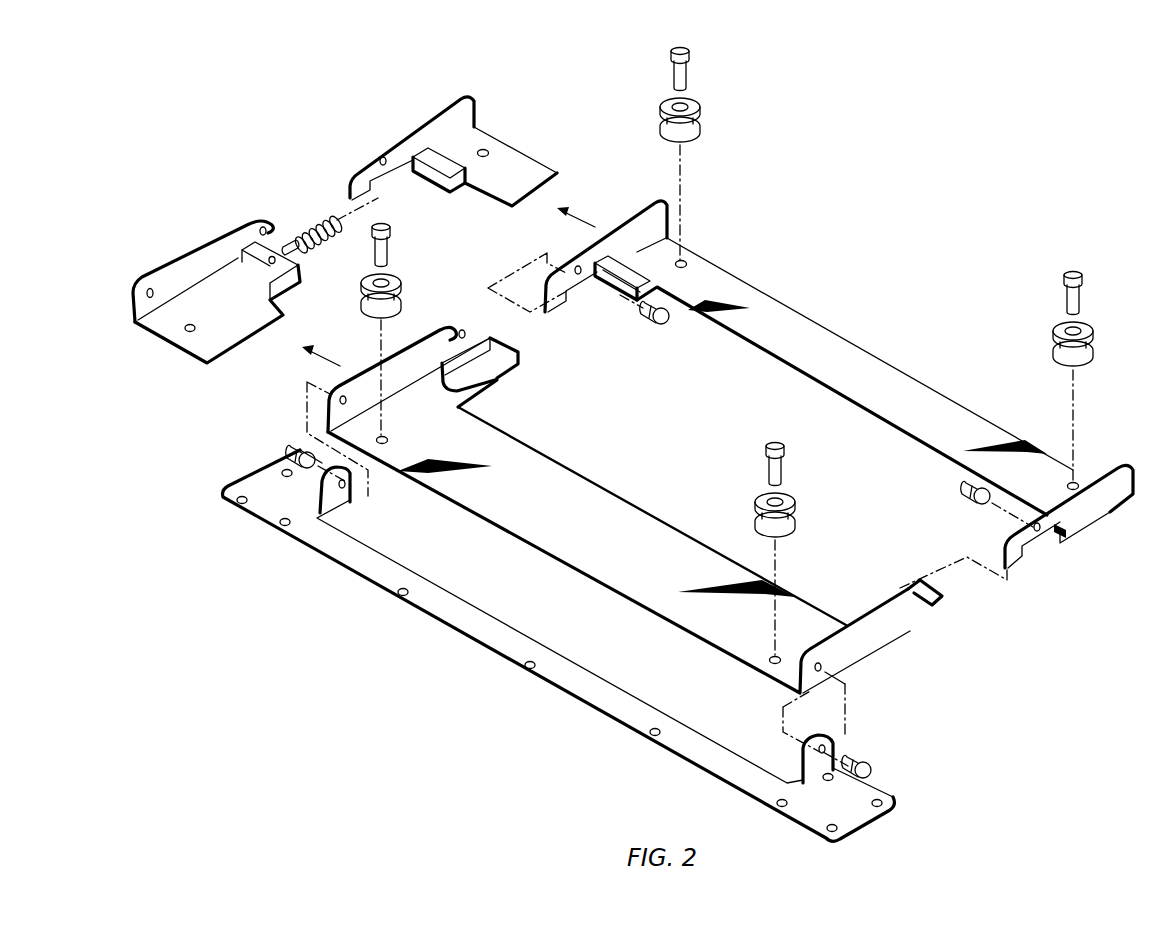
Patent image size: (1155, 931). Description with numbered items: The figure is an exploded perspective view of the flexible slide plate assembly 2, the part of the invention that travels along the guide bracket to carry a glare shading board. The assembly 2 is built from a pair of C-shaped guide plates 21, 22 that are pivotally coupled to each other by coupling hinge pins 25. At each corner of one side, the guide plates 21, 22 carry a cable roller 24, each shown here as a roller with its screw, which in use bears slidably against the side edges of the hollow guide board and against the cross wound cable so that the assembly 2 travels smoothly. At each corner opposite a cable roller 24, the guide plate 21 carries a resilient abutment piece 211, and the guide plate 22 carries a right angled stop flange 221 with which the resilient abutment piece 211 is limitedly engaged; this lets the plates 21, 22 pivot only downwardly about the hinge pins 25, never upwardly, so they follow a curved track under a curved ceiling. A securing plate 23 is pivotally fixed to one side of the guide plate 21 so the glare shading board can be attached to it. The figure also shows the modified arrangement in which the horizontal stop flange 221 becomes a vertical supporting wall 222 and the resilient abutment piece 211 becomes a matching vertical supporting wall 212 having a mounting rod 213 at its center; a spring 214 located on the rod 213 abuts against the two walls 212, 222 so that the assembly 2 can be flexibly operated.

The flexible slide plate assembly 2 is at (957, 645).
The guide plate 21 is at (197, 307).
The resilient abutment piece 211 is at (497, 366).
The vertical supporting wall 212 is at (303, 275).
The mounting rod 213 is at (290, 242).
The spring 214 is at (322, 218).
The guide plate 22 is at (457, 163).
The right angled stop flange 221 is at (625, 296).
The vertical supporting wall 222 is at (452, 176).
The securing plate 23 is at (577, 693).
The cable roller 24 is at (700, 131).
The coupling hinge pin 25 is at (668, 328).